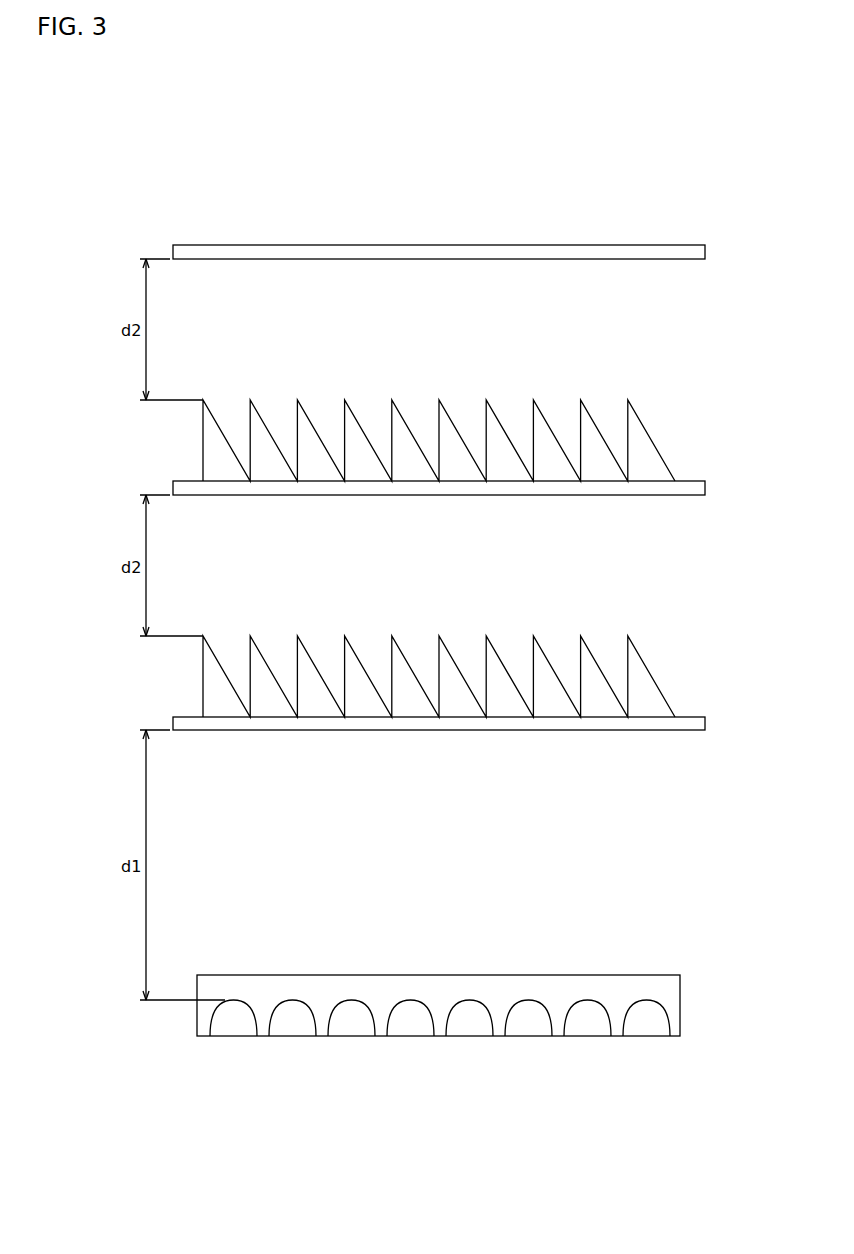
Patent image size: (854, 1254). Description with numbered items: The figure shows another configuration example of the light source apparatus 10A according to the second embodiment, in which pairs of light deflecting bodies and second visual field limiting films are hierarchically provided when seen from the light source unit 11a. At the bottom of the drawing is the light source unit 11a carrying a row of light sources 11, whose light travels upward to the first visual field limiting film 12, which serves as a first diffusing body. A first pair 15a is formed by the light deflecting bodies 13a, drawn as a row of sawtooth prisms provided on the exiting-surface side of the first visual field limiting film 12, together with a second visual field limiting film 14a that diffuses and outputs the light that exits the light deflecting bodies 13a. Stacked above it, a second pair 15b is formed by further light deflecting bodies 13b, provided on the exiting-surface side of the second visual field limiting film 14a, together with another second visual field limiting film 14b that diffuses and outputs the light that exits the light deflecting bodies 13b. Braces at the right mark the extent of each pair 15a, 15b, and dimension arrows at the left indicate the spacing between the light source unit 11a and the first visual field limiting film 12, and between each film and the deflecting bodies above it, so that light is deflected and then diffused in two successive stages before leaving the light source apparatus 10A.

The light source apparatus 10A is at (674, 162).
The light sources 11 is at (587, 1025).
The light source unit 11a is at (680, 1003).
The first visual field limiting film 12 is at (605, 728).
The light deflecting bodies 13a is at (590, 670).
The light deflecting bodies 13b is at (592, 432).
The second visual field limiting film 14a is at (606, 493).
The second visual field limiting film 14b is at (601, 261).
The pair 15a is at (713, 483).
The pair 15b is at (713, 245).